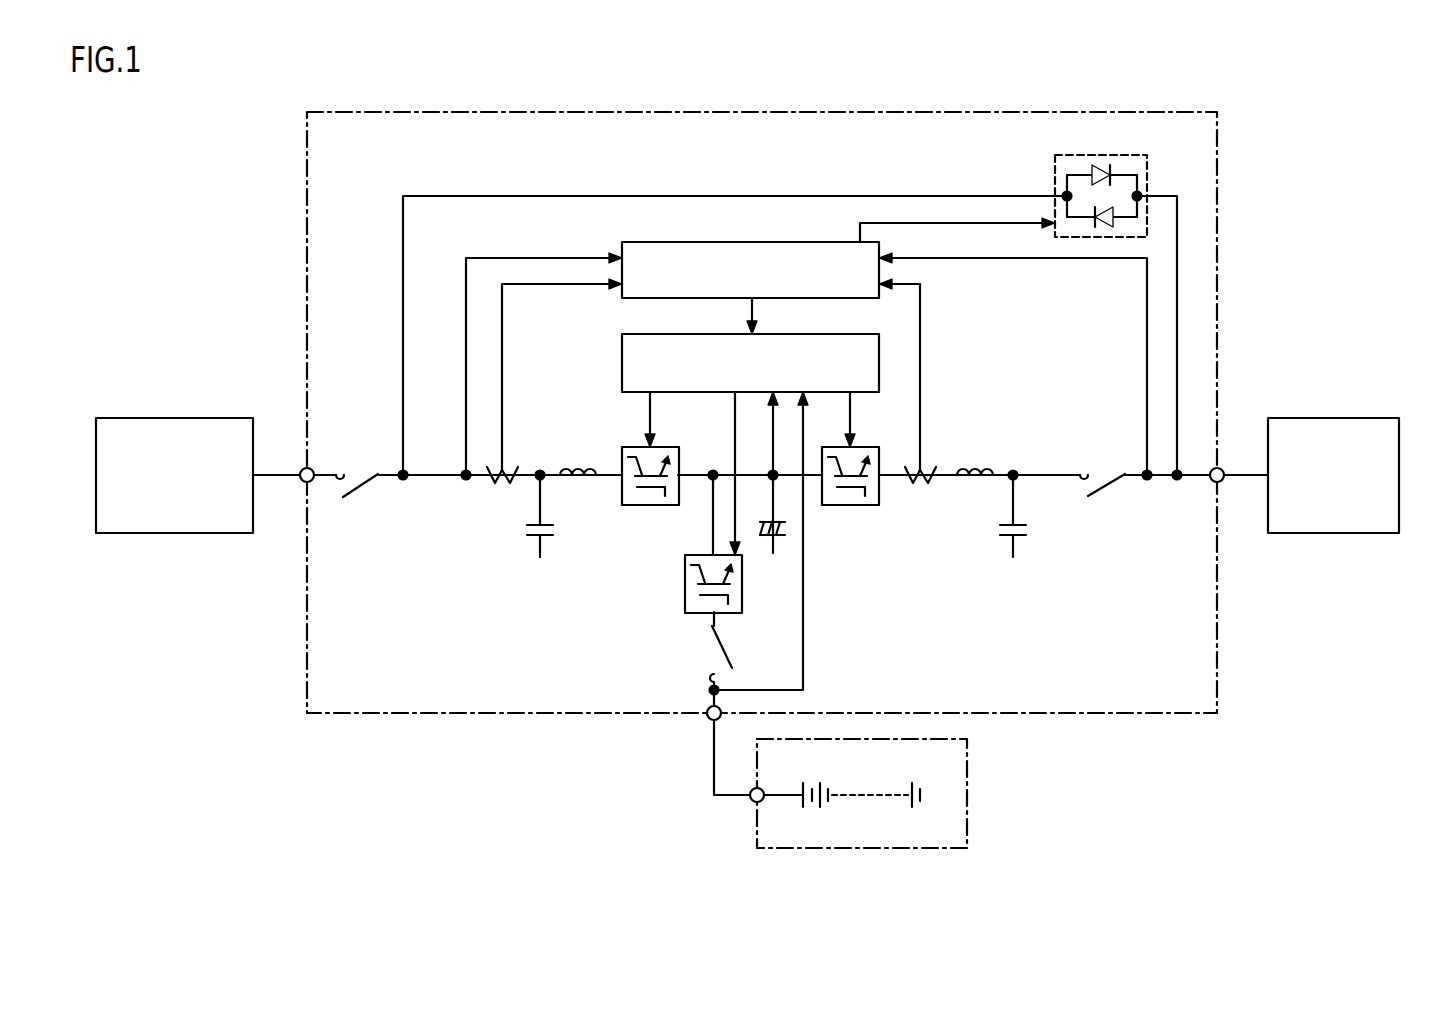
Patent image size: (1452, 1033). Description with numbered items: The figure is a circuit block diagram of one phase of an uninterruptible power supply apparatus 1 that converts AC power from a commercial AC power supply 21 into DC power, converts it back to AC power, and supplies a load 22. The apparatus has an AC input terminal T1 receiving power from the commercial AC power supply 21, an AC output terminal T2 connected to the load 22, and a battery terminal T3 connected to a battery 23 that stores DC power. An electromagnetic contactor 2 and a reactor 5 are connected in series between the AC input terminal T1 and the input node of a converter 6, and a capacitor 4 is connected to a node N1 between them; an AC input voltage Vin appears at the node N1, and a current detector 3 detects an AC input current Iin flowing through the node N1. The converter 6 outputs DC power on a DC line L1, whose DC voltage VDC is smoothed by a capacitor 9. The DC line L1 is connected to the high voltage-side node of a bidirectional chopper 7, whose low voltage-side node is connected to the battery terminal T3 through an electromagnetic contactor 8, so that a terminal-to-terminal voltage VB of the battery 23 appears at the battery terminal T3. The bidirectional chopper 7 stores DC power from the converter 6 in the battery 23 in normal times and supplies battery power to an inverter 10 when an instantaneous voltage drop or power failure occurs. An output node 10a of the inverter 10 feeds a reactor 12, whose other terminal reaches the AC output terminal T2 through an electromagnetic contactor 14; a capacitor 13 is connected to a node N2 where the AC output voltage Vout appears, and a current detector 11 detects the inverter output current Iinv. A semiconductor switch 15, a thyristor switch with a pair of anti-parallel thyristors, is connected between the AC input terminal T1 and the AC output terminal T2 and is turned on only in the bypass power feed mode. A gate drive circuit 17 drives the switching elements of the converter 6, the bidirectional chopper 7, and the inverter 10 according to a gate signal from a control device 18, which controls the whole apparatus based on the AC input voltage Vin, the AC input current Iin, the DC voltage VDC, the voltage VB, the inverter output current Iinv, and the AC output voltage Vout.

The uninterruptible power supply apparatus 1 is at (1165, 110).
The electromagnetic contactor 2 is at (362, 491).
The current detector 3 is at (498, 486).
The capacitor 4 is at (554, 528).
The reactor 5 is at (578, 462).
The converter 6 is at (648, 506).
The bidirectional chopper 7 is at (685, 583).
The electromagnetic contactor 8 is at (722, 645).
The capacitor 9 is at (767, 520).
The inverter 10 is at (862, 447).
The output node 10a is at (866, 506).
The current detector 11 is at (928, 486).
The reactor 12 is at (975, 462).
The capacitor 13 is at (1027, 528).
The electromagnetic contactor 14 is at (1110, 491).
The semiconductor switch 15 is at (1115, 153).
The gate drive circuit 17 is at (805, 334).
The control device 18 is at (808, 242).
The commercial AC power supply 21 is at (196, 418).
The load 22 is at (1350, 418).
The battery 23 is at (930, 850).
The AC input terminal T1 is at (300, 469).
The AC output terminal T2 is at (1222, 481).
The battery terminal T3 is at (707, 720).
The node N1 is at (462, 481).
The node N2 is at (1145, 470).
The DC line L1 is at (712, 470).
The AC input voltage Vin is at (466, 412).
The AC input current Iin is at (502, 412).
The inverter output current Iinv is at (920, 392).
The AC output voltage Vout is at (1147, 412).
The DC voltage VDC is at (776, 480).
The terminal-to-terminal voltage VB is at (803, 643).